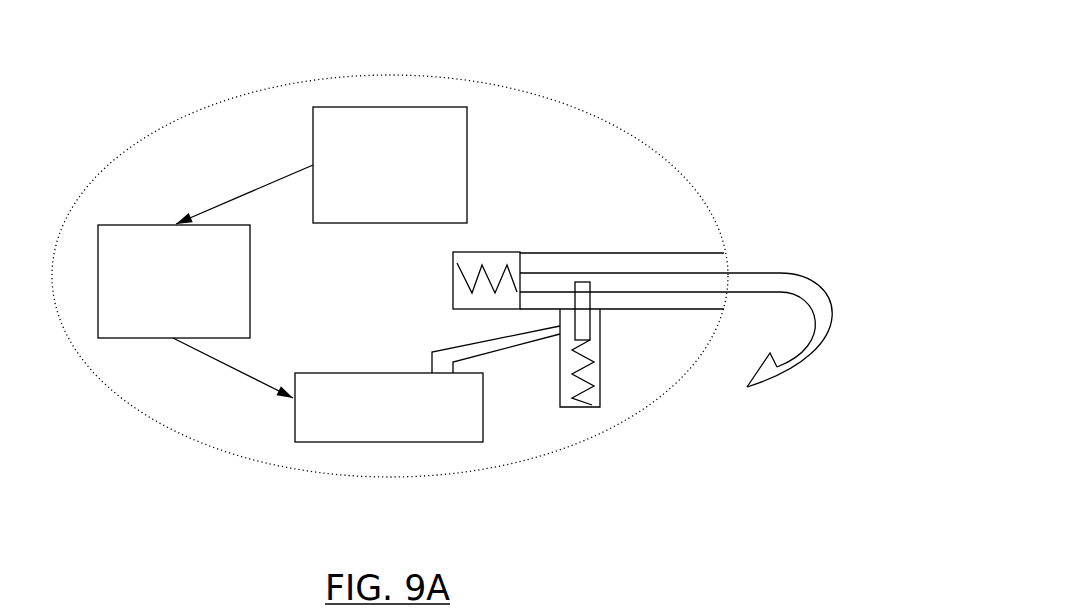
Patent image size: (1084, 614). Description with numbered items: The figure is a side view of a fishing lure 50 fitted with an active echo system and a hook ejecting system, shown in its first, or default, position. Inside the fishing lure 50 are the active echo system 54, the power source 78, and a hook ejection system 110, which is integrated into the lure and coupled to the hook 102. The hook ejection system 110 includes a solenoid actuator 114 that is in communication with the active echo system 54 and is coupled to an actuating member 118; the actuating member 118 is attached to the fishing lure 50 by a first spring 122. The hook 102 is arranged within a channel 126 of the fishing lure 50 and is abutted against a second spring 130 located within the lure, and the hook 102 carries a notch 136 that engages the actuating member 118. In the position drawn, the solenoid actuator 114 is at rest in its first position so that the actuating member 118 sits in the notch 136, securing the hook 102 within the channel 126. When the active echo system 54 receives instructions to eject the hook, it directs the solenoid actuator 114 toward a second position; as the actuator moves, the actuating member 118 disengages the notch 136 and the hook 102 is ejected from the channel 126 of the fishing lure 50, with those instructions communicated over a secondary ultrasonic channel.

The fishing lure 50 is at (231, 104).
The active echo system 54 is at (117, 224).
The power source 78 is at (425, 108).
The hook 102 is at (780, 272).
The hook ejection system 110 is at (585, 430).
The solenoid actuator 114 is at (482, 404).
The actuating member 118 is at (591, 291).
The first spring 122 is at (600, 400).
The channel 126 is at (637, 253).
The second spring 130 is at (479, 268).
The notch 136 is at (583, 284).